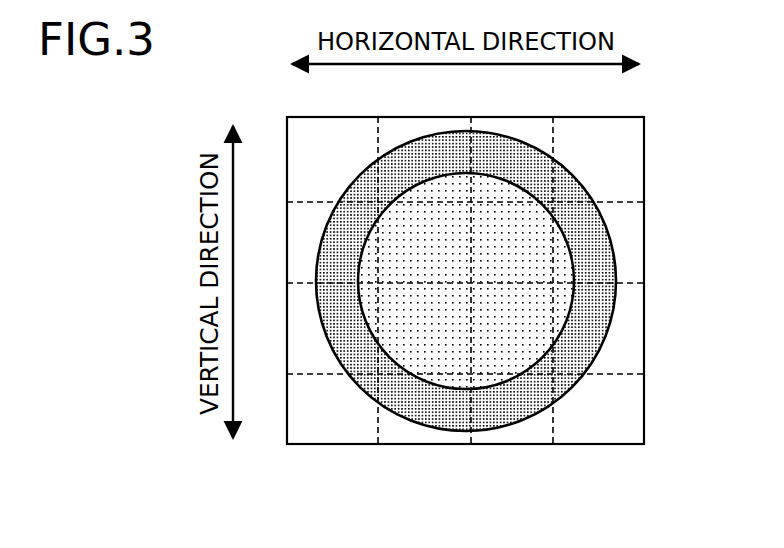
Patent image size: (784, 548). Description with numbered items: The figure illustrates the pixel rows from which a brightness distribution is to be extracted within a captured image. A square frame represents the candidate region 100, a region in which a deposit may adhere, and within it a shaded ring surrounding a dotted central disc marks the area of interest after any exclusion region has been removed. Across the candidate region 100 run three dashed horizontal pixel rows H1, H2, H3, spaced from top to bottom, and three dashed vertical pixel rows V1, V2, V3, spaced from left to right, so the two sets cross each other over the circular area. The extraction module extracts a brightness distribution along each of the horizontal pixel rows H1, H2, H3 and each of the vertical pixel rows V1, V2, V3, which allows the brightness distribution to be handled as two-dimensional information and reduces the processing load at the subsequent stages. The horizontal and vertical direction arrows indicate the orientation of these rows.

The candidate region 100 is at (646, 118).
The first horizontal pixel row H1 is at (646, 203).
The second horizontal pixel row H2 is at (646, 284).
The third horizontal pixel row H3 is at (646, 375).
The first vertical pixel row V1 is at (378, 446).
The second vertical pixel row V2 is at (471, 446).
The third vertical pixel row V3 is at (553, 446).